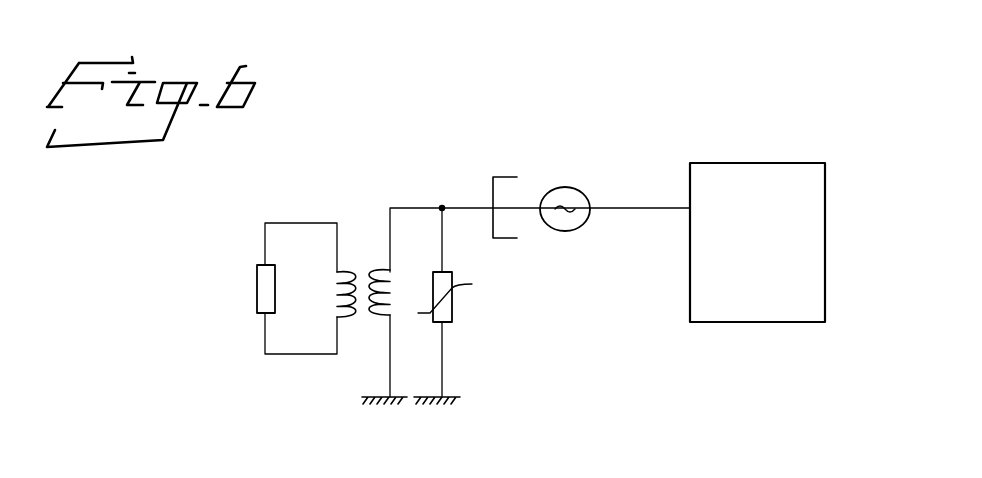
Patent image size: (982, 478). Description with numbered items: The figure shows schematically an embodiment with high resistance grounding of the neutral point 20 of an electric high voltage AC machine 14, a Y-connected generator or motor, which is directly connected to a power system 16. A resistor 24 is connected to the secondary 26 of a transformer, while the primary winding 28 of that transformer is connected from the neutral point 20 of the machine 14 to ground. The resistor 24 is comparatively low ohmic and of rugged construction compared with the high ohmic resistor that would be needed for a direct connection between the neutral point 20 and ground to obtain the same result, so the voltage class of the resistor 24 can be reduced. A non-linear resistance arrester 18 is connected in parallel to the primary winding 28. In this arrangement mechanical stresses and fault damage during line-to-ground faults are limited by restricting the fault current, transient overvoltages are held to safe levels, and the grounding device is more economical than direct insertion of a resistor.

The machine 14 is at (570, 198).
The power system 16 is at (802, 203).
The non-linear resistance arrester 18 is at (450, 310).
The neutral point 20 is at (493, 205).
The resistor 24 is at (263, 290).
The secondary 26 is at (343, 270).
The primary winding 28 is at (369, 268).